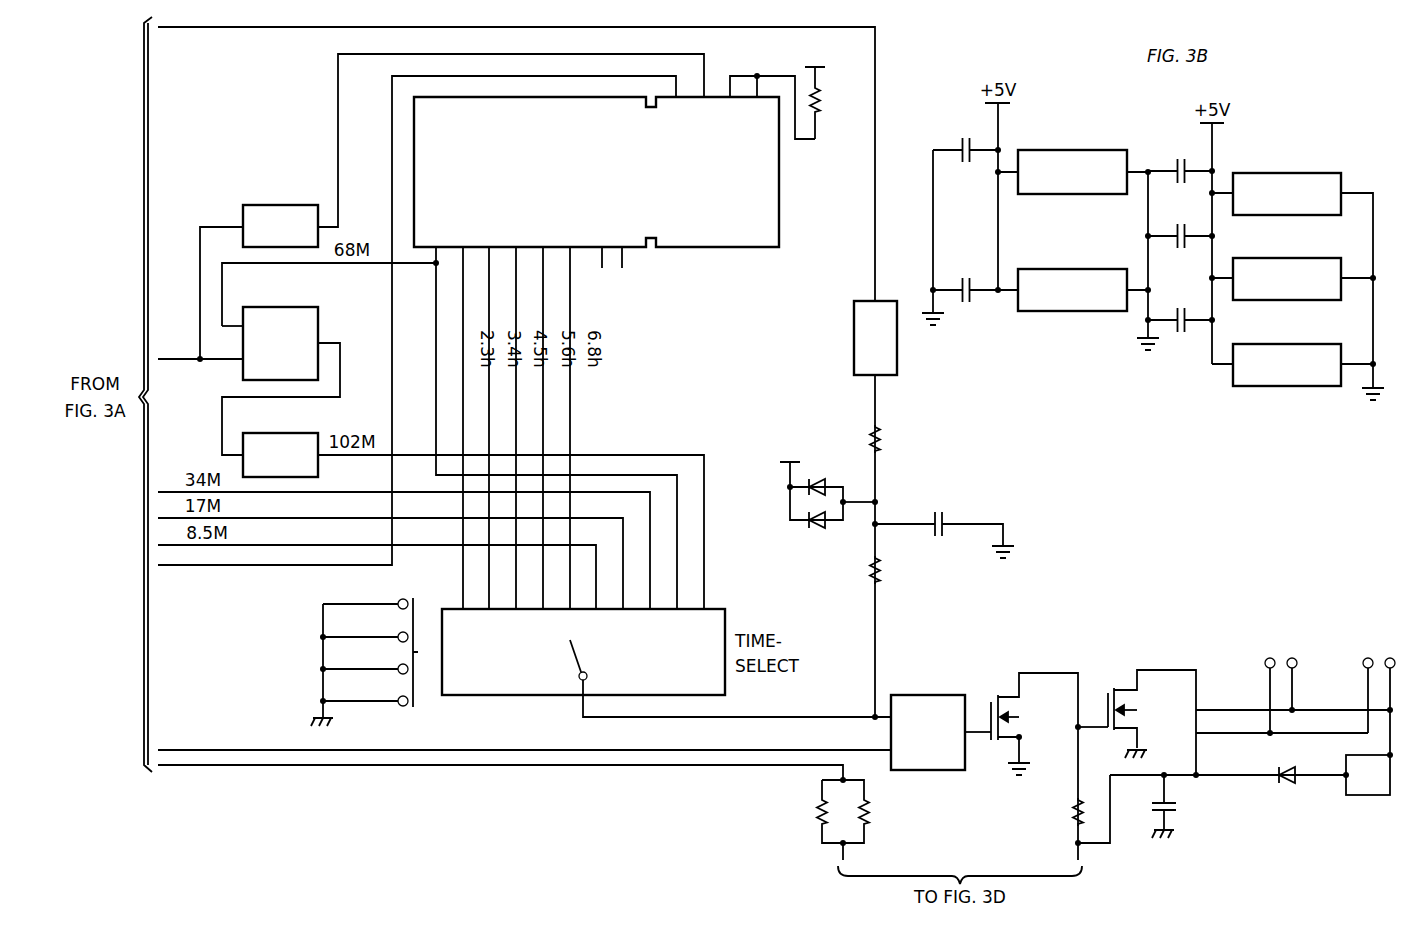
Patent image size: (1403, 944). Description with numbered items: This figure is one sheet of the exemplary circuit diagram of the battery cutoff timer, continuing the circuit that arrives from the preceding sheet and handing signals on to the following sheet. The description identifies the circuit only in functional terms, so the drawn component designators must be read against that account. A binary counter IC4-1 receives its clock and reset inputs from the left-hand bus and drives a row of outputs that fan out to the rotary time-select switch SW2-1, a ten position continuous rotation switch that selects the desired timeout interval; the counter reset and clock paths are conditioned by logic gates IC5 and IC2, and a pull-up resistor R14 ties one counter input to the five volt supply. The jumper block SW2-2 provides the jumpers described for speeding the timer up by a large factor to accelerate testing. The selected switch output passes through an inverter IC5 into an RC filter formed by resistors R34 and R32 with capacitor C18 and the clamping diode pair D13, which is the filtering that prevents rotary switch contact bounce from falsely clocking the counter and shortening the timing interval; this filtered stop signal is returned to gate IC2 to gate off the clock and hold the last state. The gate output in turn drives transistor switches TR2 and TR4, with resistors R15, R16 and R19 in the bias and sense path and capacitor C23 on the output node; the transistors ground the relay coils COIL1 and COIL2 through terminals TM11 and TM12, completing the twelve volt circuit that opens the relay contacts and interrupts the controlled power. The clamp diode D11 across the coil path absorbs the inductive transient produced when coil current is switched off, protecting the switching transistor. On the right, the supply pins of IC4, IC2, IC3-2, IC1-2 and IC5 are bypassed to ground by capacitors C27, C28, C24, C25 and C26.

The counter IC (first part) IC4-1 is at (596, 185).
The inverter IC IC5 is at (792, 328).
The gate IC IC2 is at (685, 507).
The counter IC power IC4 is at (1072, 160).
The IC3 power section IC3-2 is at (1287, 182).
The IC1 power section IC1-2 is at (1287, 267).
The resistor R14 is at (830, 91).
The resistor R34 is at (894, 439).
The resistor R32 is at (894, 570).
The resistor R15 is at (811, 811).
The resistor R16 is at (873, 818).
The resistor R19 is at (1060, 785).
The capacitor C27 is at (965, 140).
The capacitor C28 is at (965, 279).
The capacitor C24 is at (1180, 162).
The capacitor C25 is at (1180, 227).
The capacitor C26 is at (1180, 311).
The capacitor C18 is at (944, 525).
The capacitor C23 is at (1183, 805).
The diode pair D13 is at (807, 497).
The diode D11 is at (1251, 781).
The transistor TR2 is at (1034, 766).
The transistor TR4 is at (1152, 722).
The time select switch SW2-1 is at (583, 666).
The mode switch SW2-2 is at (336, 654).
The terminal TM11 is at (1294, 698).
The terminal TM12 is at (1282, 710).
The coil terminal COIL1 is at (1283, 683).
The coil terminal COIL2 is at (1379, 694).